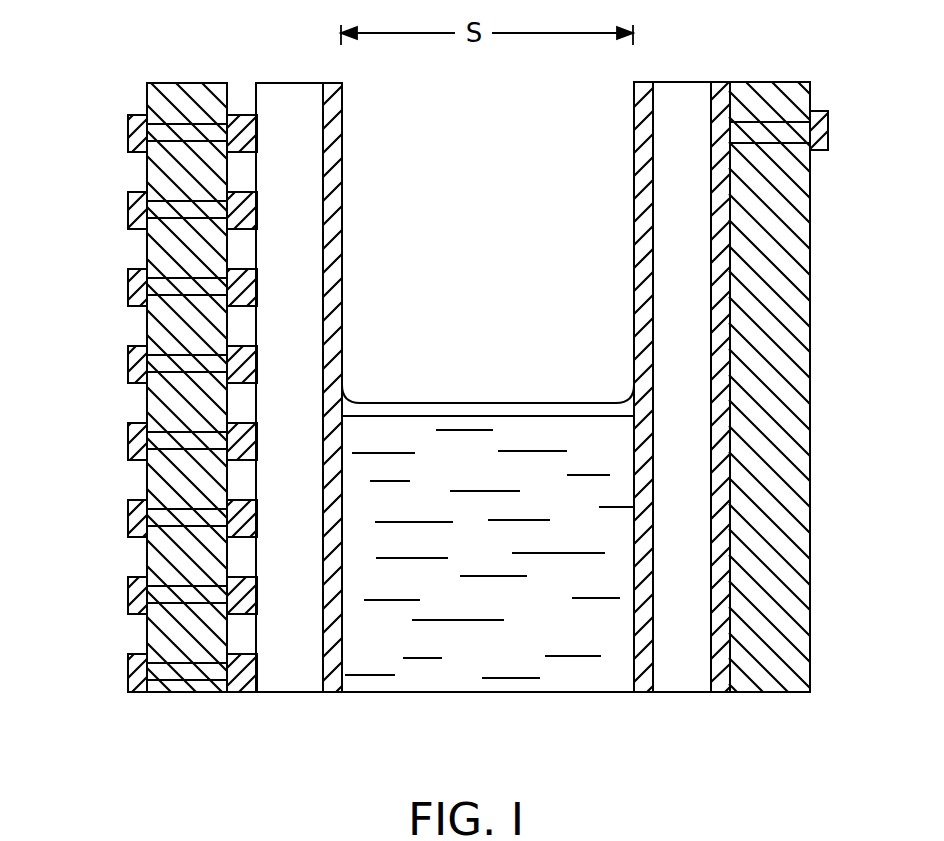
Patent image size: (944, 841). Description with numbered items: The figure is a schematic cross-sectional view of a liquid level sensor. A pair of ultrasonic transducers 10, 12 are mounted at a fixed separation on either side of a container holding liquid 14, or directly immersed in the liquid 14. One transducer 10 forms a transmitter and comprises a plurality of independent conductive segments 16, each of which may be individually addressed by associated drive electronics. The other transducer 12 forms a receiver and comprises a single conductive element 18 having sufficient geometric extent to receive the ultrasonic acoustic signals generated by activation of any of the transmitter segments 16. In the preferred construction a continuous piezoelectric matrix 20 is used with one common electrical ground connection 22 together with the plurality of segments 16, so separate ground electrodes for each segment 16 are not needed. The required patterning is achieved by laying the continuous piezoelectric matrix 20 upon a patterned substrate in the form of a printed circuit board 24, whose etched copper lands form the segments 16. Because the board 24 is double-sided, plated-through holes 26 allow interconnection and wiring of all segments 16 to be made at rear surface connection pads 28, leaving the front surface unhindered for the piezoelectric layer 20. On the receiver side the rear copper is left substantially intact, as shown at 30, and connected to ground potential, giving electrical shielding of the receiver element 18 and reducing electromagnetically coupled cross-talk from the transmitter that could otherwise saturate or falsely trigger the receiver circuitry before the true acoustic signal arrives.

The ultrasonic transducer 10 is at (352, 702).
The ultrasonic transducer 12 is at (813, 702).
The liquid 14 is at (467, 663).
The conductive segments 16 is at (238, 113).
The conductive element 18 is at (720, 82).
The piezoelectric matrix 20 is at (318, 360).
The common electrical ground connection 22 is at (331, 83).
The printed circuit board 24 is at (158, 325).
The plated-through holes 26 is at (178, 262).
The rear surface connection pads 28 is at (130, 210).
The rear side copper 30 is at (643, 82).